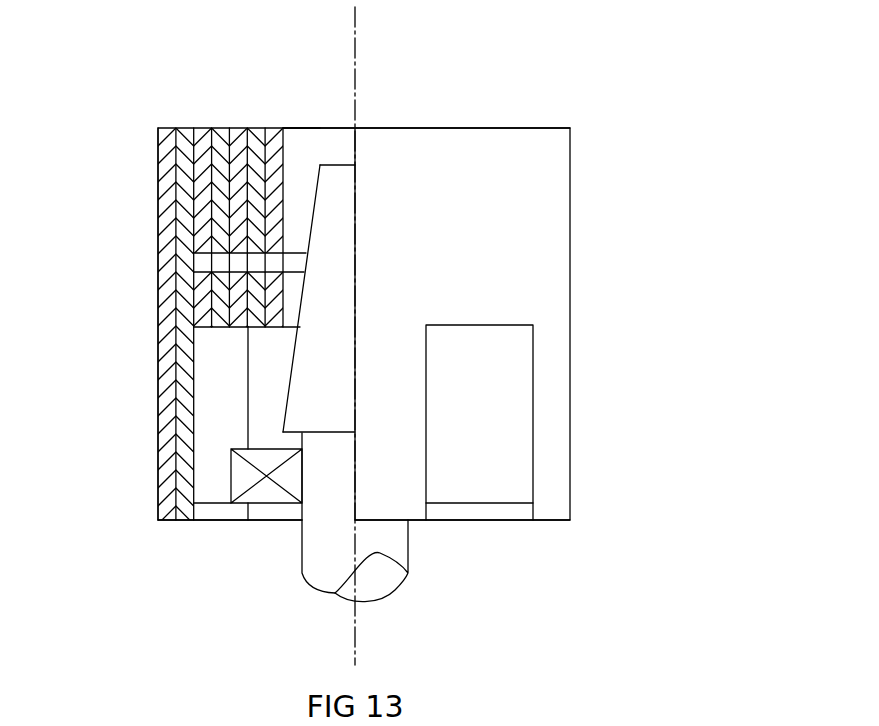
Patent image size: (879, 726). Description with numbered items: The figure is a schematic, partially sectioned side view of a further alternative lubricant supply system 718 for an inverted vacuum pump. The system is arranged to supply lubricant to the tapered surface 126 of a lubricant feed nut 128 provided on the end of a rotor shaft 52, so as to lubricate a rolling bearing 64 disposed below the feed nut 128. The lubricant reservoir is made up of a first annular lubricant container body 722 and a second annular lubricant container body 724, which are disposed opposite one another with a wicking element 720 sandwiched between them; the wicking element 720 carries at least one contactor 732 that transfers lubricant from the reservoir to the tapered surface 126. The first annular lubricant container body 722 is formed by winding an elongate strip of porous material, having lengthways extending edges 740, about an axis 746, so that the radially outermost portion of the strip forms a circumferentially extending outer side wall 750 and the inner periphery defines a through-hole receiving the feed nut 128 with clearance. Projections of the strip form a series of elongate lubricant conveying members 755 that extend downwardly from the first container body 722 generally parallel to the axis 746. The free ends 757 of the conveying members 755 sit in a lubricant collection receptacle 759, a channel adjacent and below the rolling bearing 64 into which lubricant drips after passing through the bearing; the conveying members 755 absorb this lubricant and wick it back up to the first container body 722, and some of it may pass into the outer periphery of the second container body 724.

The lubricant supply system 718 is at (644, 105).
The first annular lubricant container body 722 is at (218, 113).
The axis 746 is at (352, 25).
The lengthways extending edges 740 is at (520, 130).
The outer side wall 750 is at (158, 163).
The wicking element 720 is at (220, 262).
The second annular lubricant container body 724 is at (220, 336).
The contactor 732 is at (293, 258).
The lubricant feed nut 128 is at (340, 180).
The tapered surface 126 is at (313, 220).
The elongate lubricant conveying members 755 is at (260, 390).
The free ends 757 is at (168, 512).
The lubricant collection receptacle 759 is at (220, 515).
The rolling bearing 64 is at (285, 480).
The rotor shaft 52 is at (416, 513).